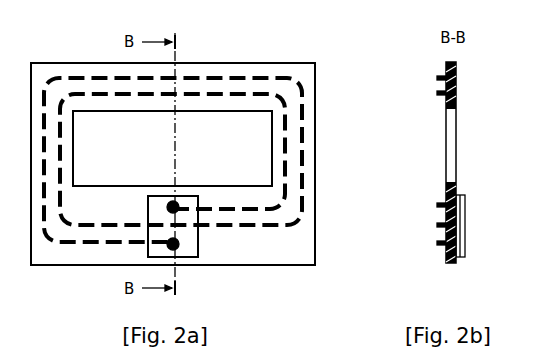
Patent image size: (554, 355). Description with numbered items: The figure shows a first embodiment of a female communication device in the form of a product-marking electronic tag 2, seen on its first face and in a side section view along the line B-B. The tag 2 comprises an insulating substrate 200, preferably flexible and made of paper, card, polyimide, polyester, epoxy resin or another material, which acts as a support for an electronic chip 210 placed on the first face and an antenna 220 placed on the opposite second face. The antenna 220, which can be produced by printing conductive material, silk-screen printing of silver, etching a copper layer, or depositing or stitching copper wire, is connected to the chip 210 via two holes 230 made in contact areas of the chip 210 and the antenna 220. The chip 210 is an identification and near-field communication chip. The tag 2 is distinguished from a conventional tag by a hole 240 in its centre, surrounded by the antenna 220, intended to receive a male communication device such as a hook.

In FIG. 2B, the electronic tag 2 is at (420, 52).
In FIG. 2A, the insulating substrate 200 is at (270, 62).
In FIG. 2B, the insulating substrate 200 is at (446, 262).
In FIG. 2A, the electronic chip 210 is at (198, 257).
In FIG. 2B, the electronic chip 210 is at (466, 258).
In FIG. 2A, the antenna 220 is at (89, 78).
In FIG. 2B, the antenna 220 is at (437, 78).
In FIG. 2B, the holes 230 is at (465, 208).
In FIG. 2A, the hole 240 is at (212, 168).
In FIG. 2B, the hole 240 is at (446, 143).